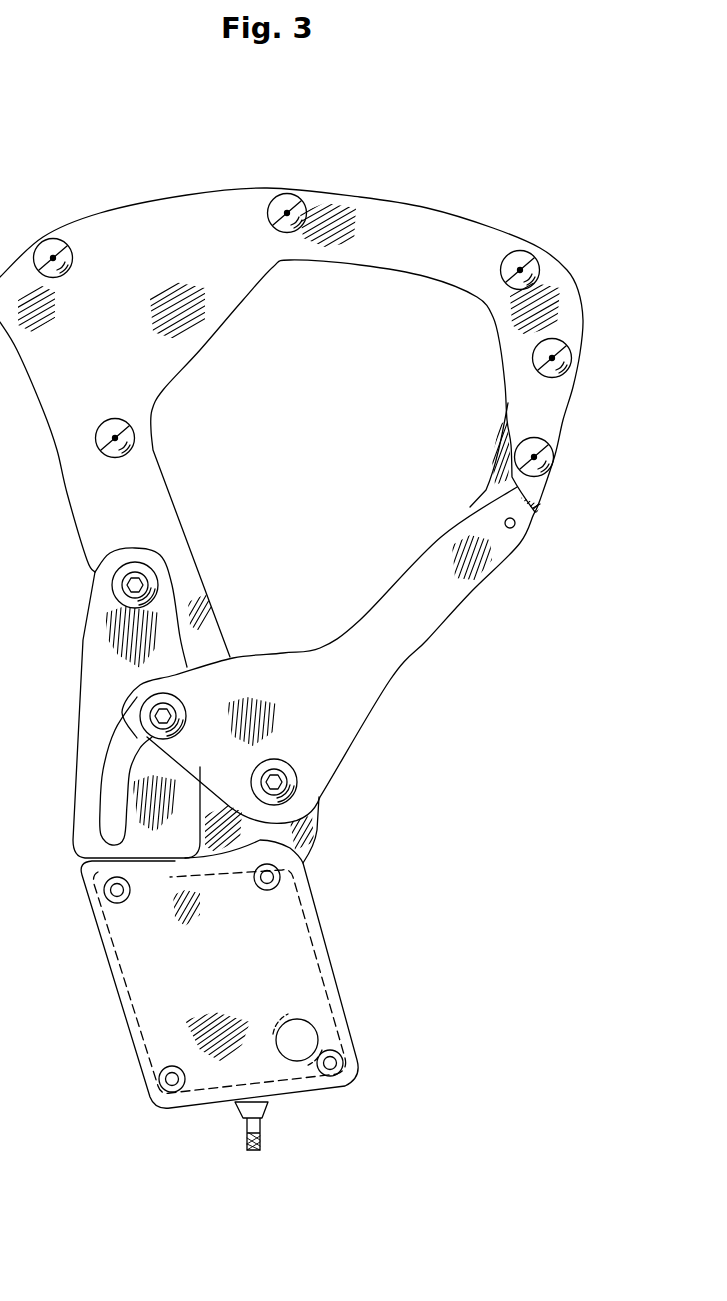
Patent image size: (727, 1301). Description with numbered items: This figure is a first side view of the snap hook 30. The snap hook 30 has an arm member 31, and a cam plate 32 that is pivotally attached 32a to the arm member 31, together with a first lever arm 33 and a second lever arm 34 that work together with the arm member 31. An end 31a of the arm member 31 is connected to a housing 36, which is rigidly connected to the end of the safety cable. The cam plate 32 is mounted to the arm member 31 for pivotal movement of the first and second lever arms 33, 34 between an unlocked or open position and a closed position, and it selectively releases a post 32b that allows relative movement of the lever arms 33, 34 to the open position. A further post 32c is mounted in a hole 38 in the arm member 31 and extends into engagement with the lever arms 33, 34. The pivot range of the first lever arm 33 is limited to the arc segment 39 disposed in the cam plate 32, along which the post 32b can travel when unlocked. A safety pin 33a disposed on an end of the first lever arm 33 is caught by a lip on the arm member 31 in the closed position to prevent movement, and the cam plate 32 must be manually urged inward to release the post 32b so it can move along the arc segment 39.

The snap hook 30 is at (514, 192).
The arm member 31 is at (583, 321).
The end of the arm member 31a is at (316, 851).
The cam plate 32 is at (118, 703).
The pivotal attachment 32a is at (117, 583).
The post 32b is at (171, 704).
The post 32c is at (295, 779).
The first lever arm 33 is at (350, 655).
The safety pin 33a is at (517, 524).
The second lever arm 34 is at (483, 492).
The housing 36 is at (123, 978).
The hole 38 is at (274, 767).
The arc segment 39 is at (103, 818).